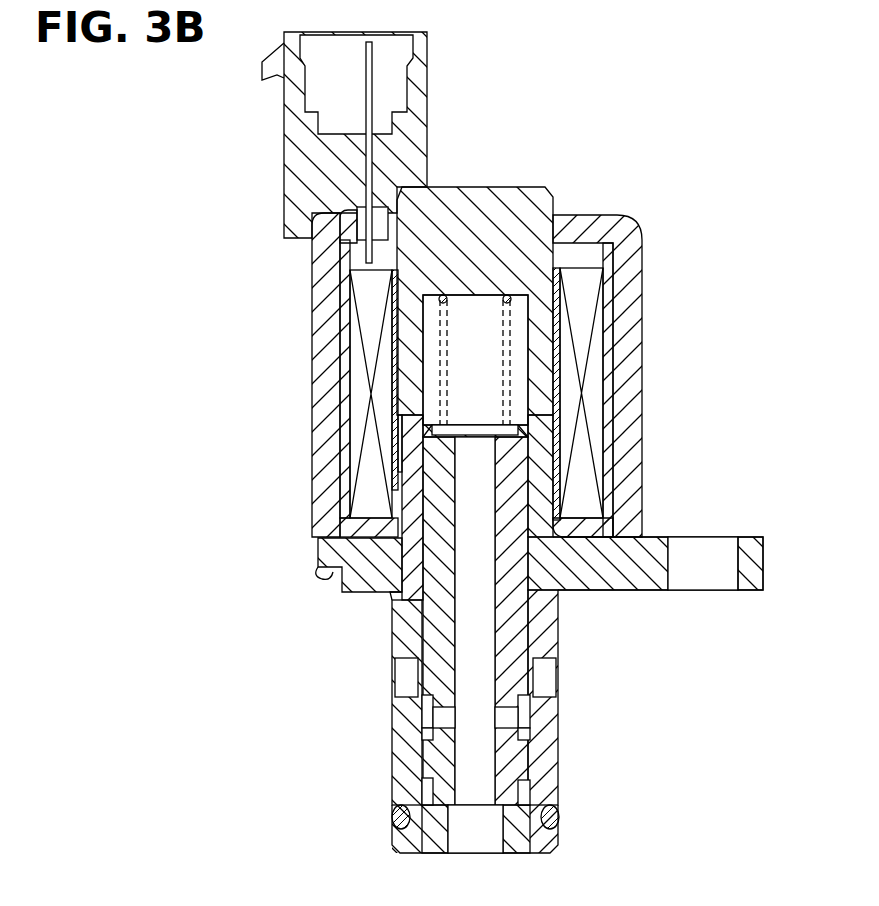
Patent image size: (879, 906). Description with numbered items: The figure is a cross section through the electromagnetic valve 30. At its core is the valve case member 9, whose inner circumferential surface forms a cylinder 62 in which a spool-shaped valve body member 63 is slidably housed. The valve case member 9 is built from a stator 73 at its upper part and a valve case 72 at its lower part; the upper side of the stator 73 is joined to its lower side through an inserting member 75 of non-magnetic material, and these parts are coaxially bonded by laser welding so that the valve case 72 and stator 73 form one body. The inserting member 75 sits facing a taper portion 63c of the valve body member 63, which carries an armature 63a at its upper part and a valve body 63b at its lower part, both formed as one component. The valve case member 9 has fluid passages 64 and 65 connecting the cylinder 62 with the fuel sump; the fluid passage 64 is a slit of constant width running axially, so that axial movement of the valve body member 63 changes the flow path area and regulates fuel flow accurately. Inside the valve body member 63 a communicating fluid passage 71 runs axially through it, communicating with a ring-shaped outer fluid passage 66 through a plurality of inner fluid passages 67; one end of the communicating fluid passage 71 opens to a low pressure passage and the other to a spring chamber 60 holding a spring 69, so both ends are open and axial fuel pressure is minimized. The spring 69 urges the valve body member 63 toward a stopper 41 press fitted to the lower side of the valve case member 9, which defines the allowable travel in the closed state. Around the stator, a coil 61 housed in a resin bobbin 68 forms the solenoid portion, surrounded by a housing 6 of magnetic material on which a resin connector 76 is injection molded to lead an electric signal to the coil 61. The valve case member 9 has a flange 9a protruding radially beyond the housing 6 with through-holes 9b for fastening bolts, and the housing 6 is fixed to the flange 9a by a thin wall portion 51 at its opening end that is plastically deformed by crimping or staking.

The electromagnetic valve 30 is at (610, 117).
The resin connector 76 is at (420, 136).
The stator 73 is at (508, 190).
The spring chamber 60 is at (462, 370).
The spring 69 is at (440, 330).
The inserting member 75 is at (540, 450).
The housing 6 is at (640, 275).
The resin bobbin 68 is at (610, 316).
The coil 61 is at (583, 333).
The armature 63a is at (563, 497).
The taper portion 63c is at (407, 440).
The valve body member 63 is at (520, 642).
The valve case 72 is at (400, 628).
The valve case member 9 is at (562, 608).
The flange 9a is at (645, 583).
The through-holes 9b is at (728, 585).
The thin wall portion 51 is at (312, 552).
The communicating fluid passage 71 is at (485, 677).
The fluid passage 65 is at (405, 668).
The fluid passage 64 is at (420, 690).
The fluid passages 67 is at (518, 715).
The fluid passage 66 is at (525, 733).
The cylinder 62 is at (428, 758).
The valve body 63b is at (510, 790).
The stopper 41 is at (520, 838).